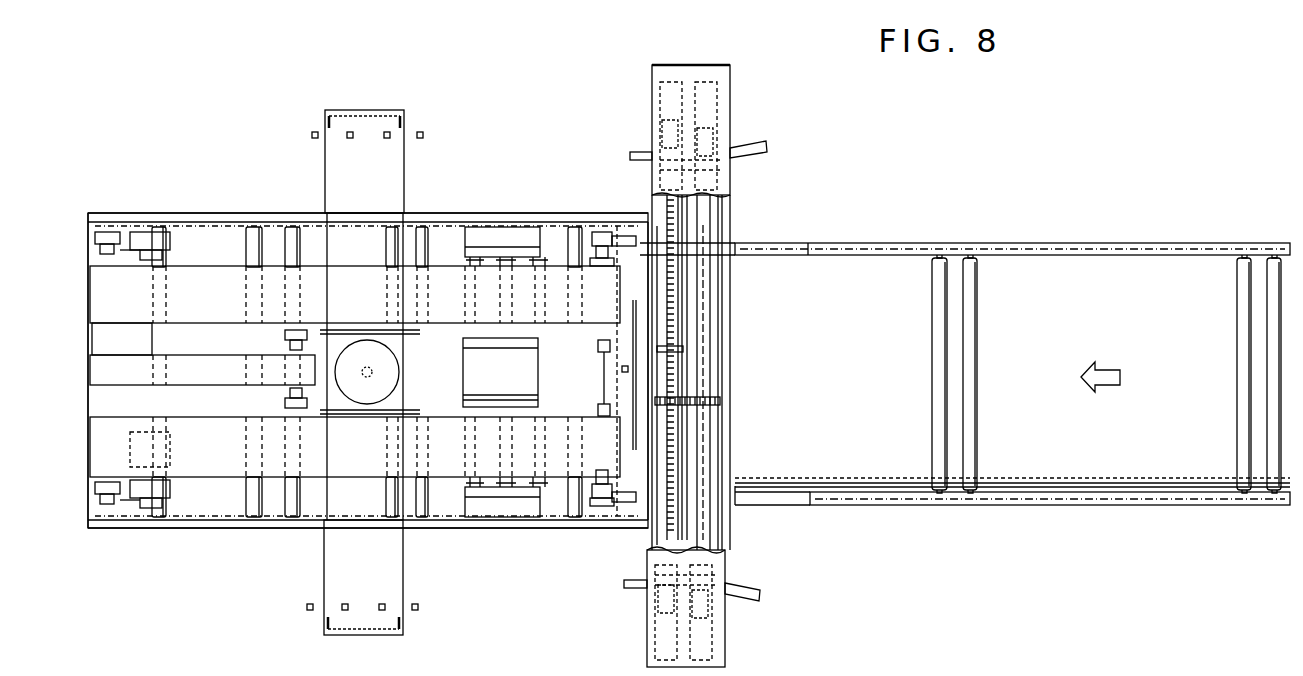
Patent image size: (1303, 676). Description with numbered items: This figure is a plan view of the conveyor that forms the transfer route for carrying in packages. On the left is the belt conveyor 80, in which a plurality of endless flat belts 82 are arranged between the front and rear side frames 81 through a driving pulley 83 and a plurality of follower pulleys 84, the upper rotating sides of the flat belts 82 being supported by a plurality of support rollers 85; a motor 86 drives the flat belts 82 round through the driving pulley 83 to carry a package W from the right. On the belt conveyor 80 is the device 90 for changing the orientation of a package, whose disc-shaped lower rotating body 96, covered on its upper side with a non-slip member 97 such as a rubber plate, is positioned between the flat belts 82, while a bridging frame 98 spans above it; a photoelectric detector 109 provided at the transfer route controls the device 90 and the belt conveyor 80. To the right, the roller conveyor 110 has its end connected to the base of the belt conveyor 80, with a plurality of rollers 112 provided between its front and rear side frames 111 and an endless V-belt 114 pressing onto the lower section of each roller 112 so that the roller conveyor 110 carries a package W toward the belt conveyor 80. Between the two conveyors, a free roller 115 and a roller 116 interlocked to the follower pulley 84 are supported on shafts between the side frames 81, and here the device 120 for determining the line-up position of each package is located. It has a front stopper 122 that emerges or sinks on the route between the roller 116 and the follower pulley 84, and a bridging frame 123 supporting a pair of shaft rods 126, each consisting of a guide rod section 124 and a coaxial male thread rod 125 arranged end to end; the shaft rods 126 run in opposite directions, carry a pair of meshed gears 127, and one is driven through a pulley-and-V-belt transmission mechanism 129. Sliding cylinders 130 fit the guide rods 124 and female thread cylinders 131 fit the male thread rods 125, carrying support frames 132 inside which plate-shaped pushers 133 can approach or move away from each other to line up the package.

The belt conveyor 80 is at (224, 168).
The side frames 81 is at (189, 213).
The flat belts 82 is at (187, 267).
The driving pulley 83 is at (113, 328).
The follower pulleys 84 is at (598, 236).
The support rollers 85 is at (241, 222).
The motor 86 is at (200, 490).
The device for changing the orientation of a package 90 is at (400, 84).
The lower rotating body 96 is at (393, 376).
The non-slip member 97 is at (387, 360).
The bridging frame 98 is at (352, 110).
The photoelectric detector 109 is at (390, 138).
The roller conveyor 110 is at (969, 192).
The side frames 111 is at (1035, 243).
The rollers 112 is at (935, 378).
The endless V-belt 114 is at (1078, 483).
The free roller 115 is at (683, 430).
The roller 116 is at (660, 455).
The device for determining package line-up position 120 is at (700, 60).
The front stopper 122 is at (632, 360).
The bridging frame 123 is at (730, 68).
The guide rod section 124 is at (708, 270).
The male thread rod 125 is at (677, 300).
The shaft rods 126 is at (672, 372).
The meshed gears 127 is at (660, 400).
The transmission mechanism 129 is at (663, 350).
The sliding cylinders 130 is at (725, 132).
The female thread cylinders 131 is at (652, 146).
The support frames 132 is at (652, 118).
The pushers 133 is at (762, 155).